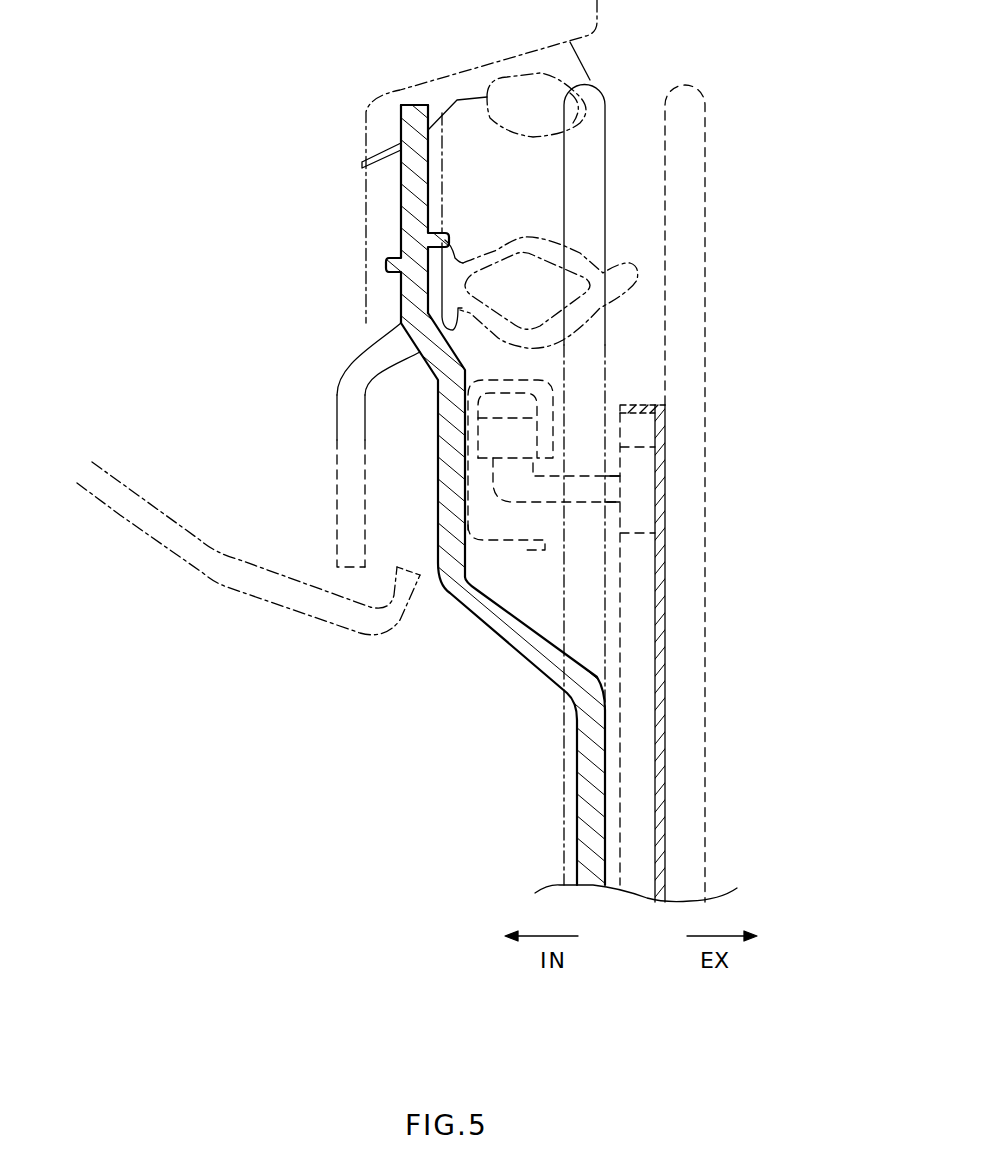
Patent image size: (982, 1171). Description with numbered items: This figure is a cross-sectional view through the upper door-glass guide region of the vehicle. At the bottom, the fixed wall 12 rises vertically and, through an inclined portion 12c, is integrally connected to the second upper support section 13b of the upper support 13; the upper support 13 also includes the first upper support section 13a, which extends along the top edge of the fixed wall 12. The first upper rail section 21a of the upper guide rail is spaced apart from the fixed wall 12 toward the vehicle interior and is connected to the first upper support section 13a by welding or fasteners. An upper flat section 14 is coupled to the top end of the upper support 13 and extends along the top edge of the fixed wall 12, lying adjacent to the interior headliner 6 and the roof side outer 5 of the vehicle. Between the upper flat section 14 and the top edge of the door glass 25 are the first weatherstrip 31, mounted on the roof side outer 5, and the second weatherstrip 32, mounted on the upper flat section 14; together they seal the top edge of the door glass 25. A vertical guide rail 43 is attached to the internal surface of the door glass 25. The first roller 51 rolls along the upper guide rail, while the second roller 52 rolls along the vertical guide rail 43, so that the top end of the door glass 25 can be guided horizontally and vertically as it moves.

The roof side outer 5 is at (597, 22).
The first weatherstrip 31 is at (588, 62).
The upper flat section 14 is at (413, 200).
The door glass 25 is at (606, 195).
The second weatherstrip 32 is at (637, 272).
The first roller 51 is at (500, 430).
The first upper support section 13a is at (437, 430).
The second upper support section 13b is at (337, 486).
The upper support 13 is at (305, 481).
The vertical guide rail 43 is at (643, 398).
The second roller 52 is at (643, 490).
The interior headliner 6 is at (140, 530).
The first upper rail section 21a is at (497, 543).
The inclined portion 12c is at (535, 650).
The fixed wall 12 is at (588, 847).